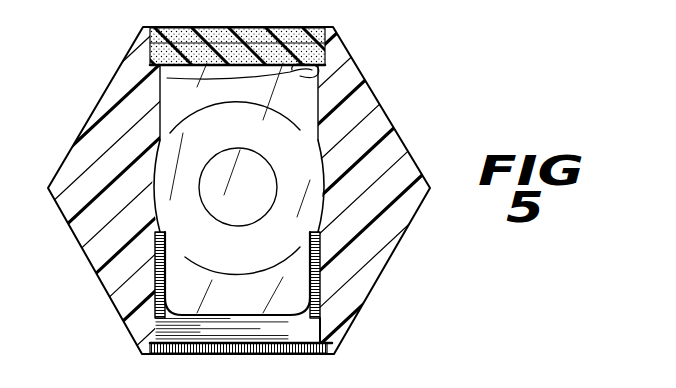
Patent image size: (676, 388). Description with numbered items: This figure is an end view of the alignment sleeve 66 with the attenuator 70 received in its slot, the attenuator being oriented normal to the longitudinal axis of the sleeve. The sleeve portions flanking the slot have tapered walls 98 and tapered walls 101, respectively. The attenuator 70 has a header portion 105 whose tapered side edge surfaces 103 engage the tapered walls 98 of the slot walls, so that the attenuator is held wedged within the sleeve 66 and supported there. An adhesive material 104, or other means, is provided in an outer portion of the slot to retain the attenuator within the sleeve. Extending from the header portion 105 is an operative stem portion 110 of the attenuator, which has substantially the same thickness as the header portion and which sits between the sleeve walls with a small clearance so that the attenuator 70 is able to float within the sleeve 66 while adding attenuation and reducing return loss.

The alignment sleeve 66 is at (364, 121).
The attenuator 70 is at (283, 320).
The tapered walls 98 is at (159, 116).
The tapered walls 101 is at (154, 290).
The tapered side edge surfaces 103 is at (158, 100).
The adhesive material 104 is at (283, 28).
The header portion 105 is at (327, 68).
The operative stem portion 110 is at (291, 160).